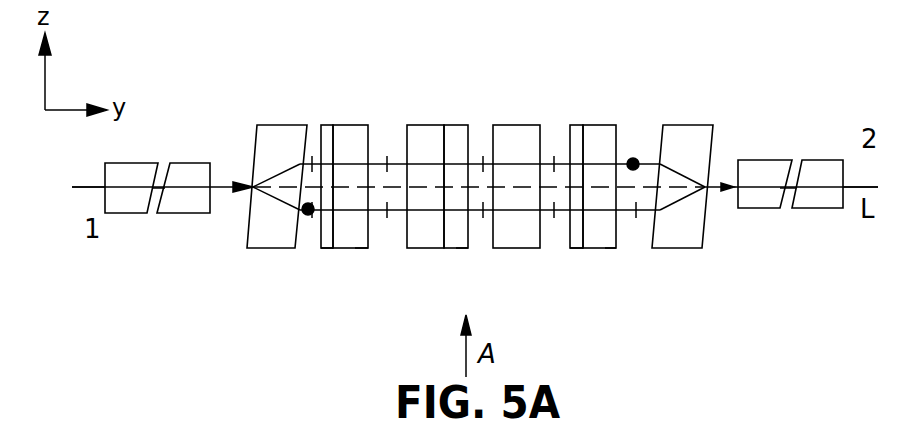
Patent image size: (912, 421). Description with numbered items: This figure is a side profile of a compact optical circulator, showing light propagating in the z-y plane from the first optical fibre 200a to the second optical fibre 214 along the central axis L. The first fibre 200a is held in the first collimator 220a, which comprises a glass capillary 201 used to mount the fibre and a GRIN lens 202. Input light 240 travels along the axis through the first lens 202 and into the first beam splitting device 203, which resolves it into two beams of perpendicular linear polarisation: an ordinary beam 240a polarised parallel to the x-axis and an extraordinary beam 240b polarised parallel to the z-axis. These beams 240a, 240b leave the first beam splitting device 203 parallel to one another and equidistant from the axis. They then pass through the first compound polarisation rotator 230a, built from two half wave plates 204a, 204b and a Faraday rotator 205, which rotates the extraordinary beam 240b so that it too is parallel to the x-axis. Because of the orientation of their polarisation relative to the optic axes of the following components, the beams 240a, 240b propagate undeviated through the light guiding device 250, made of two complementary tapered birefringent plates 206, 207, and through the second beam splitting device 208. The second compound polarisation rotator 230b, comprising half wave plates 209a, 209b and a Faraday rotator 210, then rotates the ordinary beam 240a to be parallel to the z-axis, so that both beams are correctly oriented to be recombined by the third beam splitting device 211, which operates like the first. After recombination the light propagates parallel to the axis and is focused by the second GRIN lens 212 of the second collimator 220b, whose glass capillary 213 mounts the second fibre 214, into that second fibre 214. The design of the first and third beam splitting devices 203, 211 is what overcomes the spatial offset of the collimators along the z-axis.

The first optical fibre 200a is at (90, 188).
The glass capillary 201 is at (143, 163).
The GRIN lens 202 is at (203, 163).
The first collimator 220a is at (162, 234).
The first beam splitting device 203 is at (285, 125).
The input light 240 is at (235, 219).
The ordinary beam 240a is at (272, 223).
The extraordinary beam 240b is at (277, 168).
The half wave plate 204a is at (335, 125).
The half wave plate 204b is at (327, 248).
The Faraday rotator 205 is at (353, 125).
The first compound polarisation rotator 230a is at (364, 252).
The tapered birefringent plate 206 is at (433, 125).
The tapered birefringent plate 207 is at (460, 125).
The light guiding device 250 is at (468, 254).
The second beam splitting device 208 is at (522, 125).
The half wave plate 209a is at (575, 125).
The half wave plate 209b is at (578, 248).
The Faraday rotator 210 is at (610, 125).
The second compound polarisation rotator 230b is at (628, 254).
The third beam splitting device 211 is at (666, 125).
The GRIN lens 212 is at (750, 160).
The glass capillary 213 is at (815, 160).
The second collimator 220b is at (783, 216).
The second optical fibre 214 is at (857, 187).